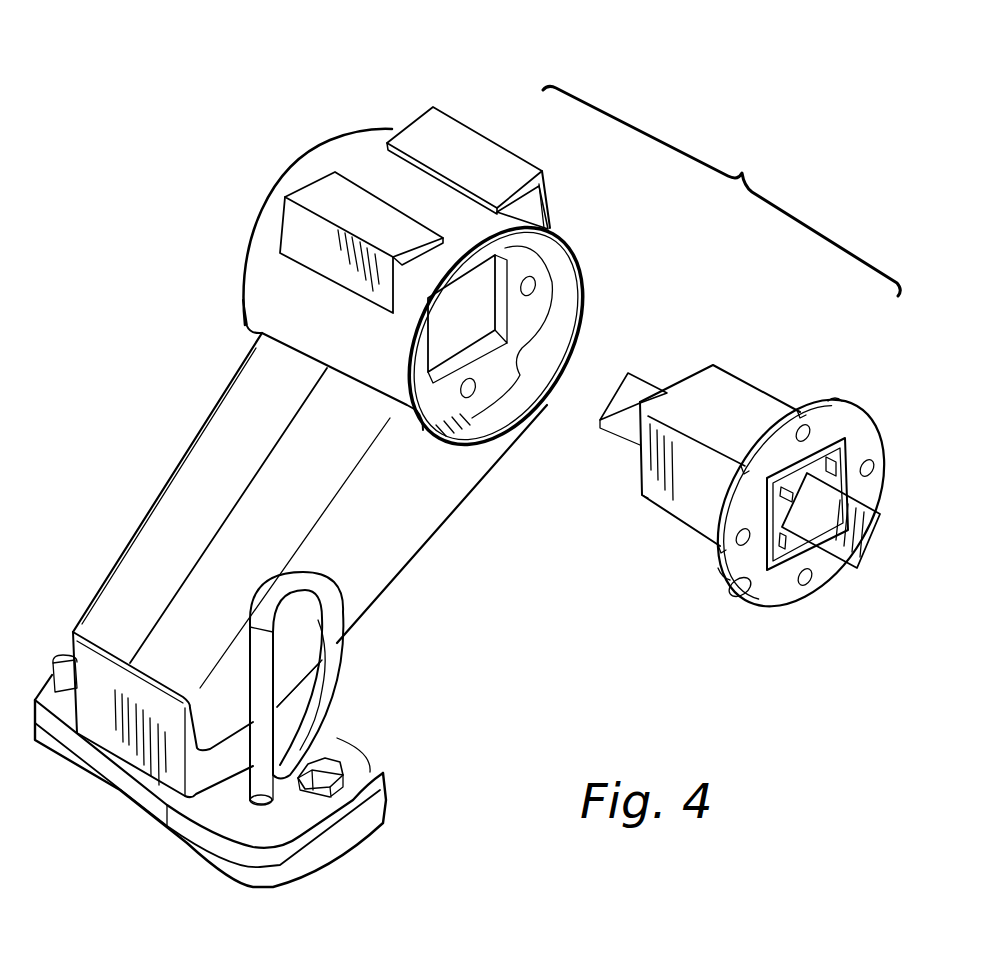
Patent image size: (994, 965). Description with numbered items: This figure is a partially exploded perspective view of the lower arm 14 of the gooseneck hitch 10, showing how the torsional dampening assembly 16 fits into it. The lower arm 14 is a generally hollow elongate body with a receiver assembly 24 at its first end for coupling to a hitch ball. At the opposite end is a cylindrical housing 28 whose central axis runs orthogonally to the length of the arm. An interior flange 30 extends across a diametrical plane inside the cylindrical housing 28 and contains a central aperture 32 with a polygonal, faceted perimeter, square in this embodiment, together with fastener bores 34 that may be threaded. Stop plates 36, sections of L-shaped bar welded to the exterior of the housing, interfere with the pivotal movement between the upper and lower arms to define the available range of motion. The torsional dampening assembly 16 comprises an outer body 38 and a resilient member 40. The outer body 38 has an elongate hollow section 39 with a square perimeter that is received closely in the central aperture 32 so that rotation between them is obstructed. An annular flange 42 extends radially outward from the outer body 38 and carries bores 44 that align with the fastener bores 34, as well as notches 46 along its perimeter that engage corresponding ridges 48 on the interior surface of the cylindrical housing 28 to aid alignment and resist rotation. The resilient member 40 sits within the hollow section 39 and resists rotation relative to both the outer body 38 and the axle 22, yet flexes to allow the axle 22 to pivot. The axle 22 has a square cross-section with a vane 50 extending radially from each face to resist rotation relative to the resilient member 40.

The gooseneck hitch 10 is at (166, 112).
The lower arm 14 is at (150, 500).
The torsional dampening assembly 16 is at (842, 332).
The axle 22 is at (604, 432).
The receiver assembly 24 is at (60, 625).
The cylindrical housing 28 is at (330, 142).
The interior flange 30 is at (525, 333).
The central aperture 32 is at (567, 258).
The fastener bores 34 is at (538, 290).
The stop plates 36 is at (296, 208).
The outer body 38 is at (740, 352).
The hollow section 39 is at (660, 484).
The resilient member 40 is at (834, 477).
The annular flange 42 is at (778, 610).
The bores 44 is at (806, 582).
The notches 46 is at (727, 594).
The ridges 48 is at (549, 228).
The vane 50 is at (834, 400).